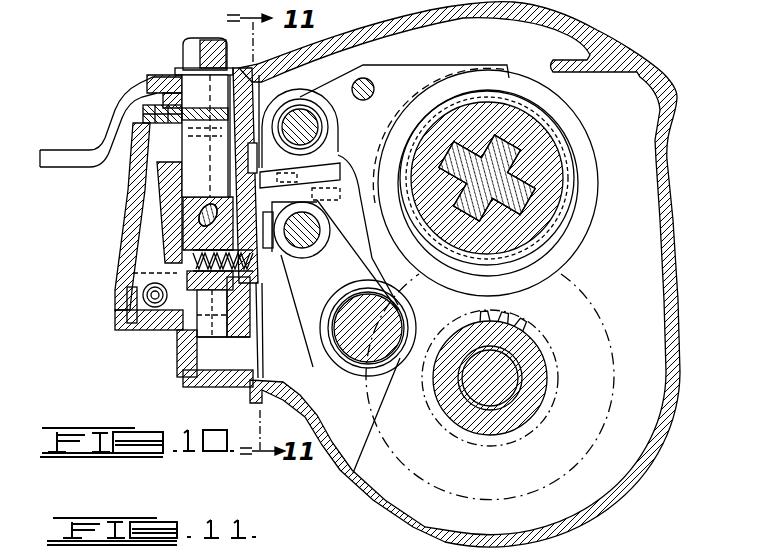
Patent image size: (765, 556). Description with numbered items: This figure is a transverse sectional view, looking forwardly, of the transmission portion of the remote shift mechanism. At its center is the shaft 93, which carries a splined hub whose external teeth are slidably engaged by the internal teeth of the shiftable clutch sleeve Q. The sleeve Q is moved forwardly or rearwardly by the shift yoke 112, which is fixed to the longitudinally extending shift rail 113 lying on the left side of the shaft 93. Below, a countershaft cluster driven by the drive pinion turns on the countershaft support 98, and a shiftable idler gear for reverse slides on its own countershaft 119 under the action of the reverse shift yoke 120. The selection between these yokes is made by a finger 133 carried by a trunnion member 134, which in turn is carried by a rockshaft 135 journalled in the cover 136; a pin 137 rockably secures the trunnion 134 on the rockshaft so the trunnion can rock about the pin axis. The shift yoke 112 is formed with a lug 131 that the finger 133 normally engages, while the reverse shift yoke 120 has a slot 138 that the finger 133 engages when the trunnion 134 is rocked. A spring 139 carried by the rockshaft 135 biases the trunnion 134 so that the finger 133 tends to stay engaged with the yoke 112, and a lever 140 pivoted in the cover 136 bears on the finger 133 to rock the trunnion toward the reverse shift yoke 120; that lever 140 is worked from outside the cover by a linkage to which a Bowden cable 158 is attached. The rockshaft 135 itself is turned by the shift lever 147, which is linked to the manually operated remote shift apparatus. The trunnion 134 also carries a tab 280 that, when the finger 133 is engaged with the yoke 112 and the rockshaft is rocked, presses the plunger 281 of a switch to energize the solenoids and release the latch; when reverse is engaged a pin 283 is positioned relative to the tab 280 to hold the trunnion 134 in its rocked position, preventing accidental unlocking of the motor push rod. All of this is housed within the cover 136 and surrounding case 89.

The housing 89 is at (352, 494).
The shaft 93 is at (487, 178).
The countershaft support 98 is at (490, 387).
The shift yoke 112 is at (405, 73).
The shift rail 113 is at (313, 125).
The countershaft 119 is at (368, 328).
The reverse shift yoke 120 is at (314, 303).
The lug 131 is at (300, 175).
The finger 133 is at (324, 152).
The trunnion member 134 is at (138, 190).
The rockshaft 135 is at (187, 77).
The cover 136 is at (133, 212).
The pin 137 is at (218, 253).
The slot 138 is at (312, 238).
The spring 139 is at (223, 253).
The lever 140 is at (206, 136).
The shift lever 147 is at (108, 108).
The Bowden cable 158 is at (312, 196).
The tab 280 is at (160, 287).
The plunger 281 is at (163, 337).
The pin 283 is at (122, 322).
The shiftable clutch sleeve Q is at (548, 115).